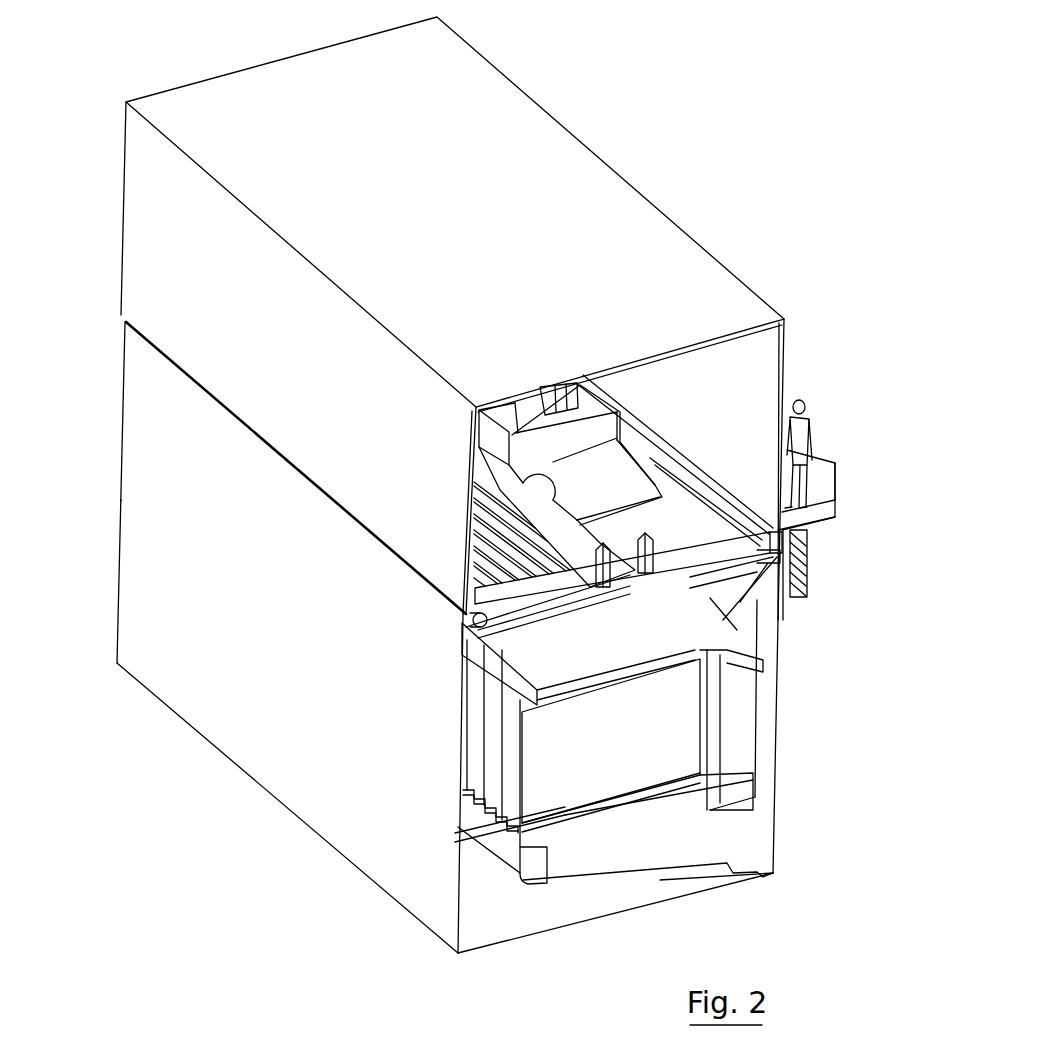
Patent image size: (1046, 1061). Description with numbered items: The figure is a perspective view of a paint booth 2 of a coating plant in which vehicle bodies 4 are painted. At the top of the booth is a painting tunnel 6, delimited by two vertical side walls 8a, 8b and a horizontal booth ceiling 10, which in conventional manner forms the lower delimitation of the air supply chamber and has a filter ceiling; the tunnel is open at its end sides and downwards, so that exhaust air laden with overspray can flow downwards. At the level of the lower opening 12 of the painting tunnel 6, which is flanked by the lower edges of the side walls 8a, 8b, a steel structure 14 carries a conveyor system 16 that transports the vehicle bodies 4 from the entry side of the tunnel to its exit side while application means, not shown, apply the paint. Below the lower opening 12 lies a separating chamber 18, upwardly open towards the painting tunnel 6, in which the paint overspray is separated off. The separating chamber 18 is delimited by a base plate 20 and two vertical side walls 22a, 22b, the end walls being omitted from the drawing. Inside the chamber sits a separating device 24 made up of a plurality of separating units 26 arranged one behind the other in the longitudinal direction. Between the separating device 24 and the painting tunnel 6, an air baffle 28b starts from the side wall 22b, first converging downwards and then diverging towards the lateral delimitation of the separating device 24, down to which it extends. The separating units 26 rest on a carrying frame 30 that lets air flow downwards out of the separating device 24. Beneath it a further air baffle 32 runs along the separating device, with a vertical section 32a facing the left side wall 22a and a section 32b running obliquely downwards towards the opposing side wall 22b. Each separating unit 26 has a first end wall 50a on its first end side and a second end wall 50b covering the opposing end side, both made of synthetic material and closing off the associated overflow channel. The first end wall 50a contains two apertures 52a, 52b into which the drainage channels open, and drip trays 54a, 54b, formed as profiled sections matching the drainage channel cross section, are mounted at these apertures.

The paint booth 2 is at (731, 104).
The vehicle body 4 is at (647, 425).
The painting tunnel 6 is at (748, 437).
The side wall 8a is at (157, 250).
The side wall 8b is at (762, 358).
The booth ceiling 10 is at (723, 307).
The lower opening 12 is at (462, 620).
The steel structure 14 is at (803, 557).
The conveyor system 16 is at (628, 553).
The separating chamber 18 is at (618, 646).
The base plate 20 is at (493, 921).
The side wall 22a is at (287, 773).
The side wall 22b is at (742, 698).
The separating device 24 is at (682, 758).
The separating unit 26 is at (517, 770).
The air baffle 28b is at (790, 623).
The carrying frame 30 is at (650, 804).
The air baffle 32 is at (614, 882).
The vertical section 32a is at (518, 855).
The oblique section 32b is at (657, 864).
The first end wall 50a is at (513, 730).
The second end wall 50b is at (710, 693).
The aperture 52a is at (523, 803).
The aperture 52b is at (543, 880).
The drip tray 54a is at (520, 813).
The drip tray 54b is at (513, 857).